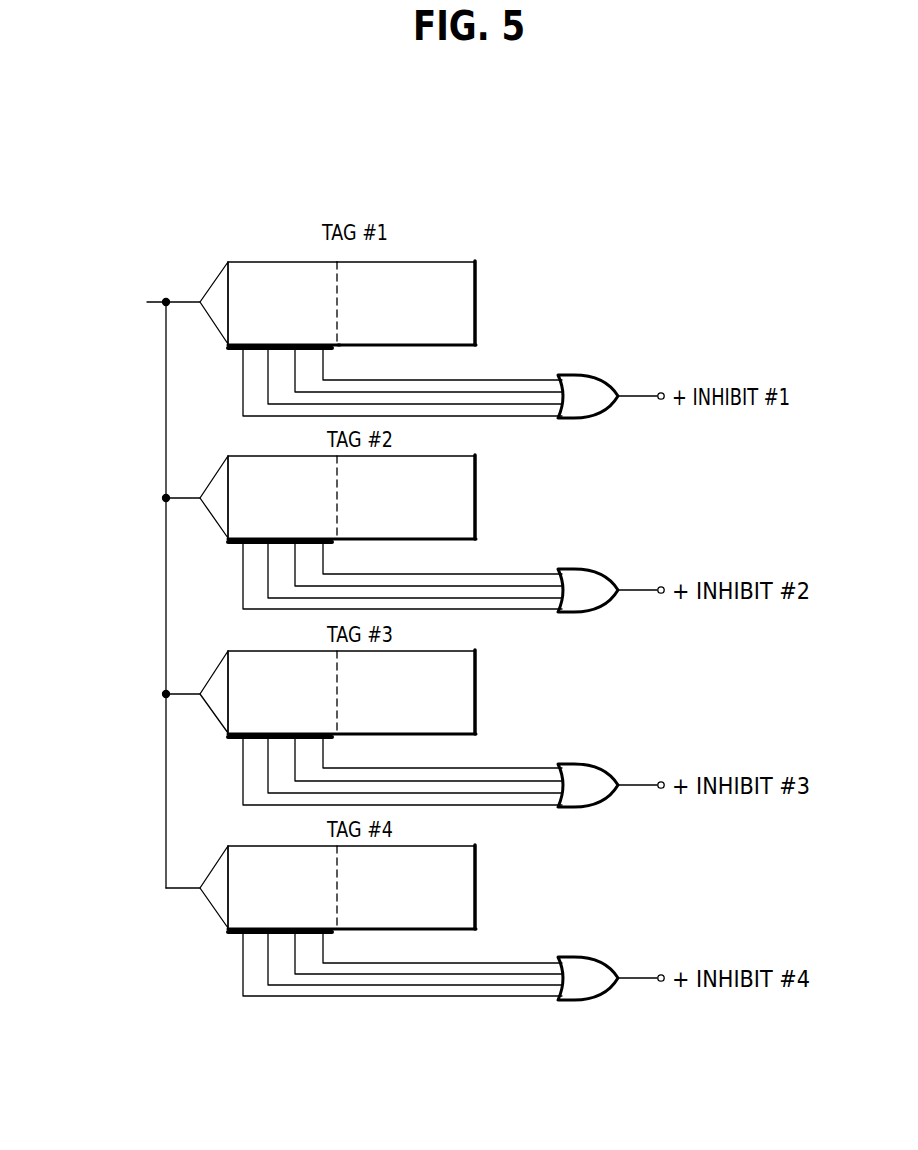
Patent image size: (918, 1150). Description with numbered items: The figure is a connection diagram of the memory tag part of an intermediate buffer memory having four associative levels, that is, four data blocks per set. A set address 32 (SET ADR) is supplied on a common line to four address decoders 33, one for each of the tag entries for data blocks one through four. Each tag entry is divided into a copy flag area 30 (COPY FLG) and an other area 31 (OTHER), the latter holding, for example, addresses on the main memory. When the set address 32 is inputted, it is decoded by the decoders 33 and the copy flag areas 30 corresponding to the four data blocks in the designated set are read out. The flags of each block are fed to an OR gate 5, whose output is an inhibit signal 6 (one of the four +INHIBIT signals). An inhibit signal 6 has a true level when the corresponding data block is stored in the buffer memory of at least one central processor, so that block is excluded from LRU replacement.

The OR gate 5 is at (581, 375).
The inhibit signal 6 is at (624, 394).
The copy flag area 30 is at (277, 261).
The other area 31 is at (437, 261).
The set address 32 is at (181, 300).
The address decoder 33 is at (219, 279).